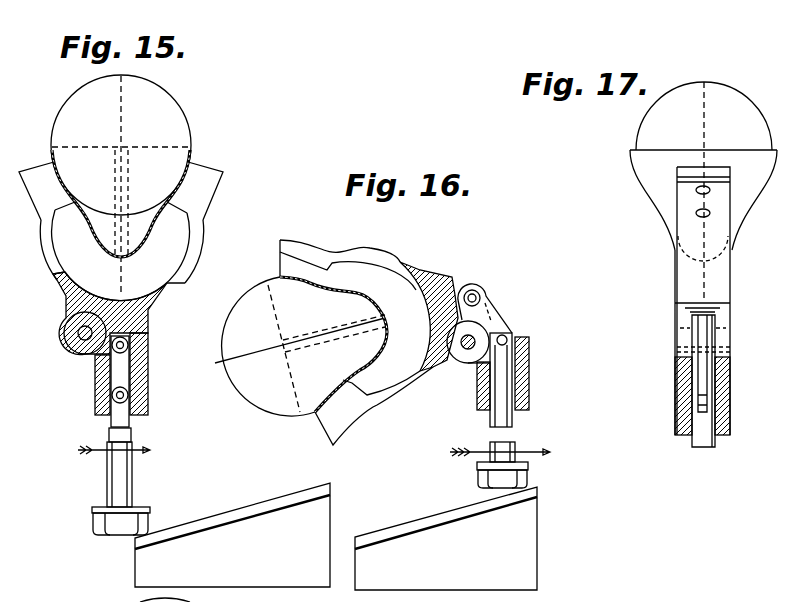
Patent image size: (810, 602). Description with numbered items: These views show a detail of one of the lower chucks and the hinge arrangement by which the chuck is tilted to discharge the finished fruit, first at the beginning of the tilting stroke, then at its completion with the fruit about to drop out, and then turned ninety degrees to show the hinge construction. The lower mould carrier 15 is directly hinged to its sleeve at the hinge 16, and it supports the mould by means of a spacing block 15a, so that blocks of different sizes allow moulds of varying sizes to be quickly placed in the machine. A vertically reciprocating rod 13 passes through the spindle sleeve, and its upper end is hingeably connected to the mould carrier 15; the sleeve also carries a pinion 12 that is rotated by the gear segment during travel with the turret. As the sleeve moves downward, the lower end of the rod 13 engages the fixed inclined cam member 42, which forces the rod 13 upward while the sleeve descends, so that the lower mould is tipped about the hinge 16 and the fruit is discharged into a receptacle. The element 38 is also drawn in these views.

In FIG. 15, the pinion 12 is at (121, 180).
In FIG. 15, the vertically reciprocating rod 13 is at (120, 474).
In FIG. 16, the vertically reciprocating rod 13 is at (500, 417).
In FIG. 17, the vertically reciprocating rod 13 is at (757, 455).
In FIG. 15, the lower mould carrier 15 is at (200, 233).
In FIG. 16, the lower mould carrier 15 is at (390, 398).
In FIG. 17, the lower mould carrier 15 is at (697, 88).
In FIG. 15, the spacing block 15a is at (43, 172).
In FIG. 16, the spacing block 15a is at (284, 266).
In FIG. 15, the hinge 16 is at (78, 336).
In FIG. 16, the hinge 16 is at (465, 348).
In FIG. 17, the hinge 16 is at (690, 447).
In FIG. 15, the lining 38 is at (193, 155).
In FIG. 16, the lining 38 is at (282, 278).
In FIG. 17, the lining 38 is at (757, 177).
In FIG. 15, the fixed inclined cam member 42 is at (237, 522).
In FIG. 16, the fixed inclined cam member 42 is at (428, 527).